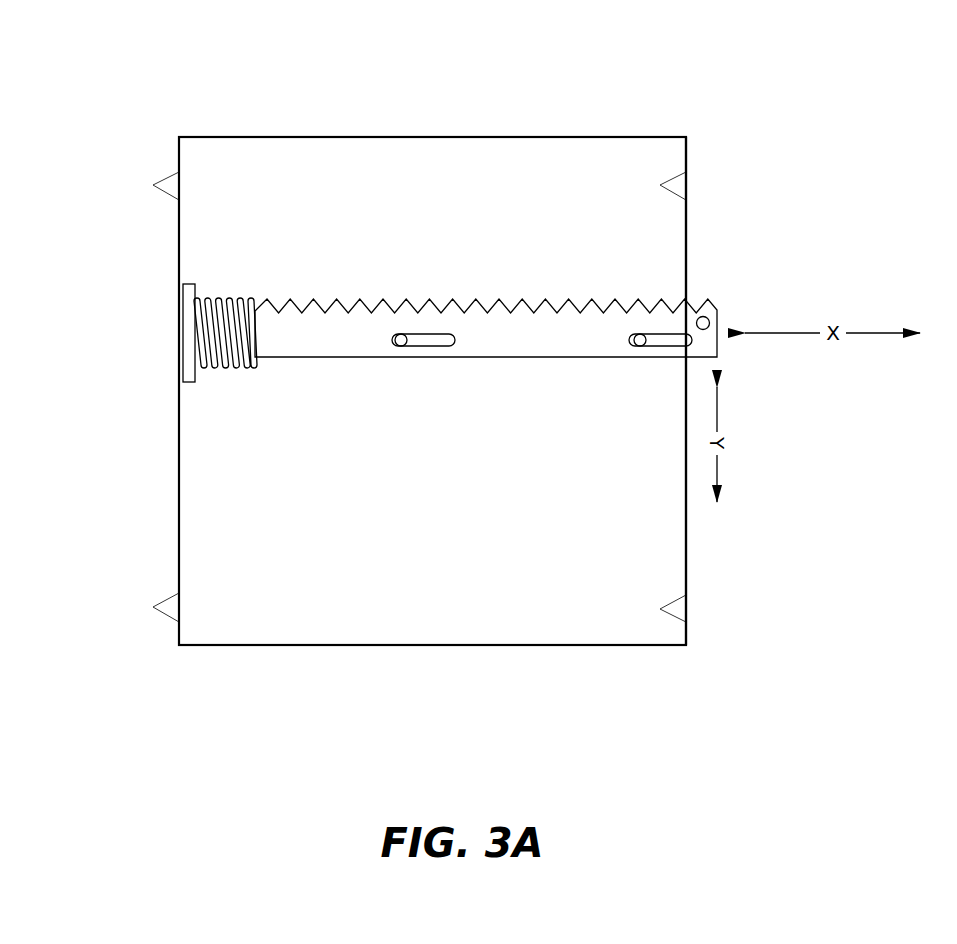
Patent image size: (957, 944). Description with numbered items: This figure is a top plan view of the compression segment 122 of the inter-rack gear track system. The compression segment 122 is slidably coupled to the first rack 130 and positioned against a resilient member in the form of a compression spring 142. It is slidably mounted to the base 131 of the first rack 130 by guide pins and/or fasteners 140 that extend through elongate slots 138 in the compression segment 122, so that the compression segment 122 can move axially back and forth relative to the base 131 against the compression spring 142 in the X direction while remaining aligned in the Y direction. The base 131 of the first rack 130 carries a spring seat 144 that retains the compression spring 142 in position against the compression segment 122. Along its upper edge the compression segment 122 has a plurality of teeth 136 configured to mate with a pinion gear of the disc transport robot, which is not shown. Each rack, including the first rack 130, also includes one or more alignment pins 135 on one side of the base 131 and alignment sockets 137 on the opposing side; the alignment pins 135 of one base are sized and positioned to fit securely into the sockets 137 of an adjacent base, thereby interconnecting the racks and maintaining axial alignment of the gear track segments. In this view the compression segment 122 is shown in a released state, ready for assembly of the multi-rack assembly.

The compression segment 122 is at (523, 257).
The first rack 130 is at (543, 650).
The base 131 is at (677, 552).
The alignment pins 135 is at (168, 612).
The teeth 136 is at (380, 300).
The alignment sockets 137 is at (687, 610).
The elongate slots 138 is at (447, 346).
The guide pins and/or fasteners 140 is at (400, 346).
The compression spring 142 is at (218, 290).
The spring seat 144 is at (184, 345).